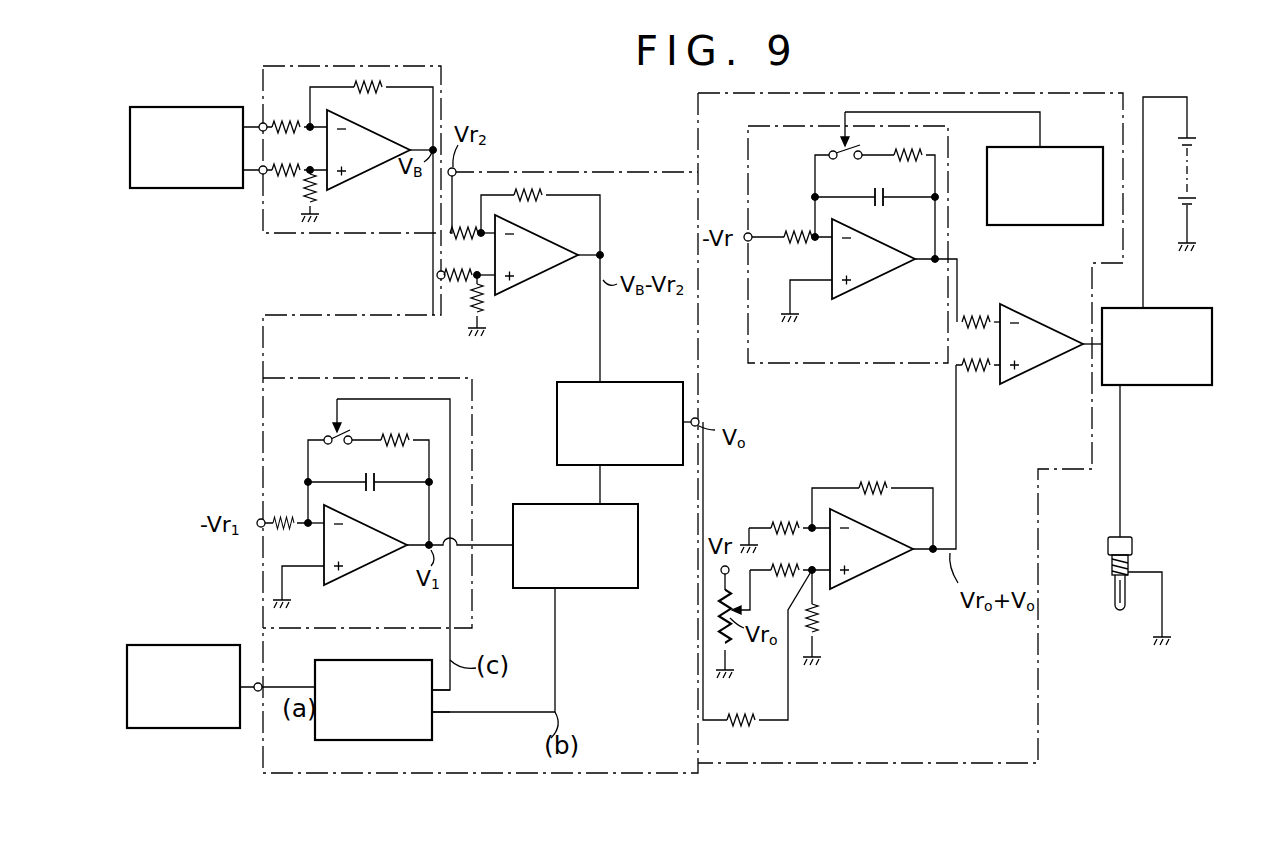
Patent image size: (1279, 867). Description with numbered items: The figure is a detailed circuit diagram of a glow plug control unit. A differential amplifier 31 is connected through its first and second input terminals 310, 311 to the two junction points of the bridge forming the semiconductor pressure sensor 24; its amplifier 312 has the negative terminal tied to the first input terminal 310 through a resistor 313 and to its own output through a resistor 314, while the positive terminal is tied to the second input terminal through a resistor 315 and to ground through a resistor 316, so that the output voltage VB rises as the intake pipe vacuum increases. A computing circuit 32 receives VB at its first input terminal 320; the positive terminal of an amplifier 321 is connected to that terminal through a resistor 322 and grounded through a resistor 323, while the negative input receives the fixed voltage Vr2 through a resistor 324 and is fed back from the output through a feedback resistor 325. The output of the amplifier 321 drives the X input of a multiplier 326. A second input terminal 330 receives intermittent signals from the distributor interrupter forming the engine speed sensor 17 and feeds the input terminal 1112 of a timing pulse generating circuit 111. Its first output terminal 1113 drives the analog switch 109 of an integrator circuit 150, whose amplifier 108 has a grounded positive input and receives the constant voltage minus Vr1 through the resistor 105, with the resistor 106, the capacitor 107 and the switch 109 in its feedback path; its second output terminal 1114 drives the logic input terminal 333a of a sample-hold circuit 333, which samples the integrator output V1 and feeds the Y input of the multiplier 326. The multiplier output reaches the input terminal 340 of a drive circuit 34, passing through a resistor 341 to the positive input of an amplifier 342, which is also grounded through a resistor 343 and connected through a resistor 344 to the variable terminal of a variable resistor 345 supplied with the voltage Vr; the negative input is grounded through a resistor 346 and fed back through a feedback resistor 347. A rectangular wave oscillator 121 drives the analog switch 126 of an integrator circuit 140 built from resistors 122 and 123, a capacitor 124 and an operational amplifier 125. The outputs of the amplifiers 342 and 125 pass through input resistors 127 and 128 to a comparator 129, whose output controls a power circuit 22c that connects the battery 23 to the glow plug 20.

The engine speed sensor 17 is at (190, 728).
The glow plug 20 is at (1134, 545).
The power circuit 22c is at (1212, 325).
The battery 23 is at (1192, 180).
The semiconductor pressure sensor 24 is at (200, 188).
The differential amplifier 31 is at (441, 78).
The computing circuit 32 is at (698, 773).
The drive circuit 34 is at (1040, 763).
The resistor 105 is at (284, 516).
The resistor 106 is at (393, 438).
The capacitor 107 is at (372, 480).
The amplifier 108 is at (378, 572).
The analog switch 109 is at (328, 432).
The timing pulse generating circuit 111 is at (386, 740).
The rectangular wave oscillator 121 is at (1045, 225).
The resistor 122 is at (800, 248).
The resistor 123 is at (912, 163).
The capacitor 124 is at (878, 207).
The operational amplifier 125 is at (880, 284).
The analog switch 126 is at (848, 165).
The input resistor 127 is at (982, 318).
The input resistor 128 is at (978, 372).
The comparator 129 is at (1050, 370).
The integrator circuit 140 is at (905, 365).
The integrator circuit 150 is at (472, 392).
The first input terminal 310 is at (262, 124).
The second input terminal 311 is at (262, 176).
The amplifier 312 is at (386, 170).
The resistor 313 is at (293, 123).
The resistor 314 is at (378, 92).
The resistor 315 is at (304, 167).
The resistor 316 is at (318, 204).
The first input terminal 320 is at (437, 278).
The amplifier 321 is at (537, 270).
The resistor 322 is at (466, 262).
The resistor 323 is at (486, 314).
The resistor 324 is at (464, 226).
The feedback resistor 325 is at (540, 200).
The multiplier 326 is at (638, 382).
The second input terminal 330 is at (262, 692).
The sample-hold circuit 333 is at (610, 588).
The logic input terminal 333a is at (558, 590).
The input terminal 340 is at (699, 419).
The resistor 341 is at (740, 728).
The amplifier 342 is at (892, 585).
The resistor 343 is at (818, 622).
The resistor 344 is at (796, 570).
The variable resistor 345 is at (727, 652).
The resistor 346 is at (784, 522).
The feedback resistor 347 is at (876, 486).
The input terminal 1112 is at (312, 683).
The first output terminal 1113 is at (434, 694).
The second output terminal 1114 is at (434, 716).